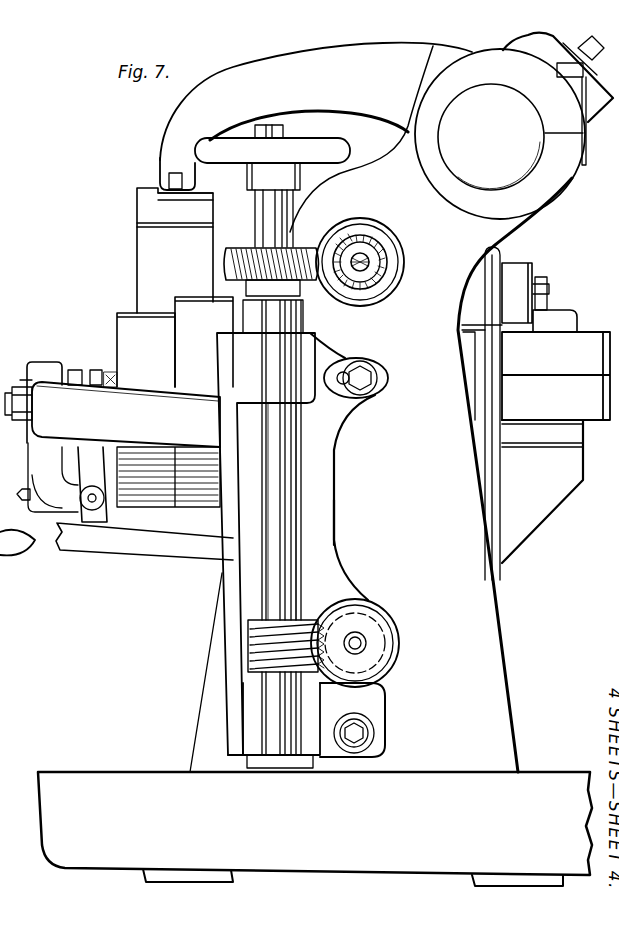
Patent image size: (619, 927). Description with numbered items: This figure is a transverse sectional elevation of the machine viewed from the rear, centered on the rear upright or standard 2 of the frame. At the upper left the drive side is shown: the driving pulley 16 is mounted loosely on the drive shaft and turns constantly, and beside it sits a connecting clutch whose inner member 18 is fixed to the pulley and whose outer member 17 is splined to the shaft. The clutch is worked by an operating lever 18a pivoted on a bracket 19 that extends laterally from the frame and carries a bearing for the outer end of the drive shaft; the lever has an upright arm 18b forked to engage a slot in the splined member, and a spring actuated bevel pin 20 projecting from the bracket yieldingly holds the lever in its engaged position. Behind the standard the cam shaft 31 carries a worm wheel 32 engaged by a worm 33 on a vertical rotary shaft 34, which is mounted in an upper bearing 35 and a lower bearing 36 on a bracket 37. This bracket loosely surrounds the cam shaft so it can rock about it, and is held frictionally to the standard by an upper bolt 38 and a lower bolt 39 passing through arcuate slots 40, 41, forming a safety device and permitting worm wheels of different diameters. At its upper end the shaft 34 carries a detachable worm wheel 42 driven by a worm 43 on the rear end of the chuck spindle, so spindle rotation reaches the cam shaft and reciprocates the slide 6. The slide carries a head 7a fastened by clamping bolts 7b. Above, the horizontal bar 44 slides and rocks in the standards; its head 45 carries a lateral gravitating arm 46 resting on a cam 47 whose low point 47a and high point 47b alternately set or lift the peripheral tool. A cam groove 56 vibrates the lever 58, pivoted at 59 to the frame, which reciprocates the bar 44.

The rear upright or standard 2 is at (315, 466).
The slide 6 is at (556, 376).
The head 7a is at (566, 310).
The clamping bolts 7b is at (545, 280).
The driving pulley 16 is at (175, 402).
The outer member of connecting clutch 17 is at (98, 373).
The inner clutch member 18 is at (113, 368).
The operating lever 18a is at (143, 548).
The upright arm 18b is at (87, 463).
The bracket 19 is at (112, 413).
The spring actuated bevel pin 20 is at (22, 490).
The cam shaft 31 is at (366, 637).
The worm wheel 32 is at (367, 627).
The worm 33 is at (250, 628).
The vertical rotary shaft 34 is at (300, 480).
The upper bearing 35 is at (266, 544).
The lower bearing 36 is at (274, 720).
The bracket 37 is at (334, 536).
The upper bolt 38 is at (370, 372).
The lower bolt 39 is at (368, 728).
The arcuate slot 40 is at (343, 372).
The arcuate slot 41 is at (375, 733).
The detachable worm wheel 42 is at (237, 245).
The worm 43 is at (388, 246).
The horizontal bar 44 is at (500, 134).
The head 45 is at (537, 42).
The lateral gravitating arm 46 is at (316, 101).
The cam 47 is at (186, 202).
The low point 47a is at (202, 195).
The high point 47b is at (145, 182).
The cam groove 56 is at (228, 158).
The lever 58 is at (503, 477).
The pivot 59 is at (514, 293).